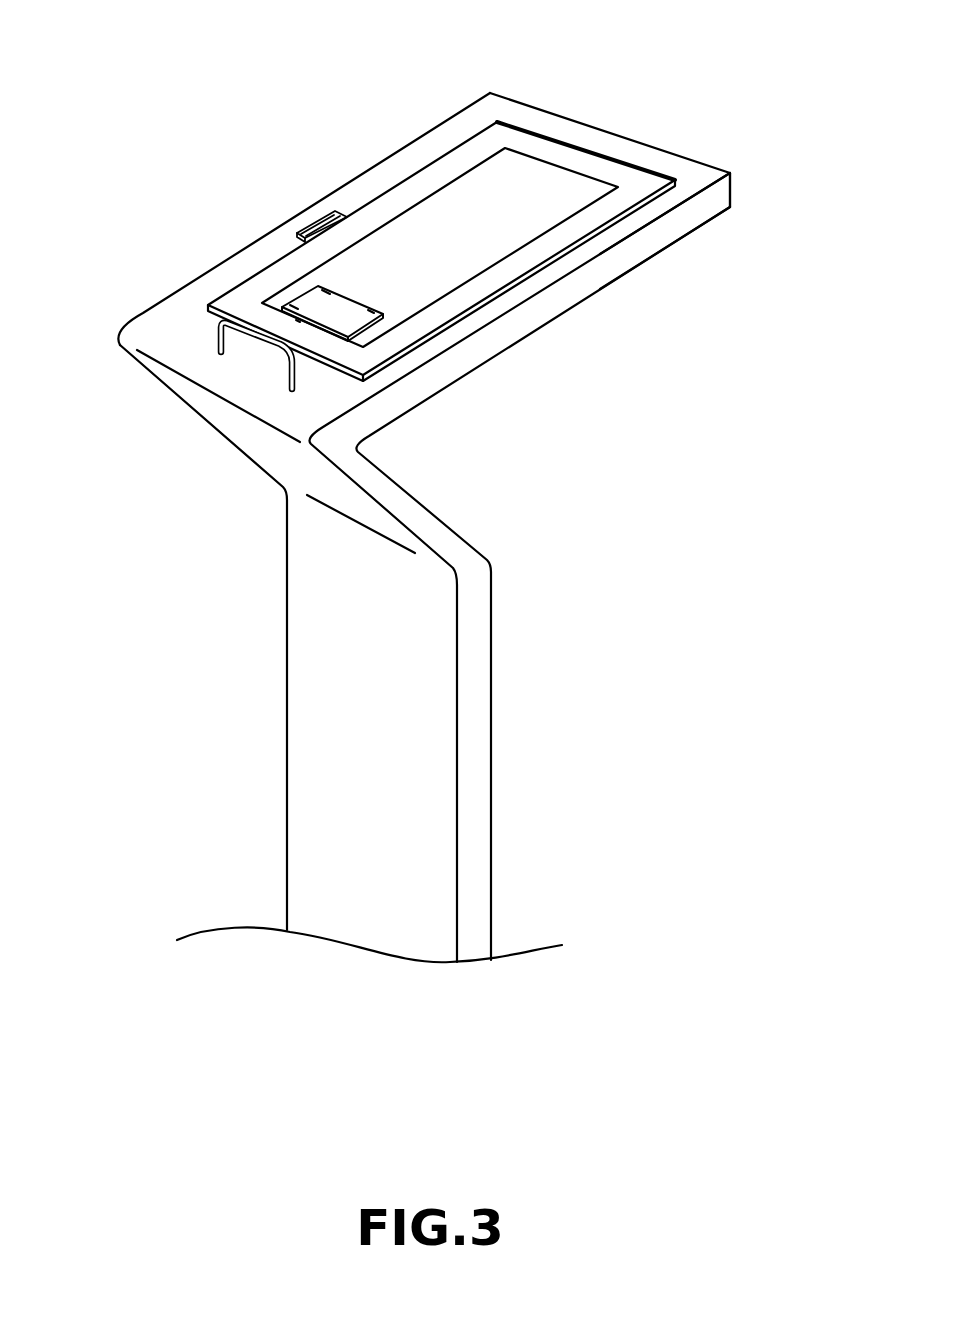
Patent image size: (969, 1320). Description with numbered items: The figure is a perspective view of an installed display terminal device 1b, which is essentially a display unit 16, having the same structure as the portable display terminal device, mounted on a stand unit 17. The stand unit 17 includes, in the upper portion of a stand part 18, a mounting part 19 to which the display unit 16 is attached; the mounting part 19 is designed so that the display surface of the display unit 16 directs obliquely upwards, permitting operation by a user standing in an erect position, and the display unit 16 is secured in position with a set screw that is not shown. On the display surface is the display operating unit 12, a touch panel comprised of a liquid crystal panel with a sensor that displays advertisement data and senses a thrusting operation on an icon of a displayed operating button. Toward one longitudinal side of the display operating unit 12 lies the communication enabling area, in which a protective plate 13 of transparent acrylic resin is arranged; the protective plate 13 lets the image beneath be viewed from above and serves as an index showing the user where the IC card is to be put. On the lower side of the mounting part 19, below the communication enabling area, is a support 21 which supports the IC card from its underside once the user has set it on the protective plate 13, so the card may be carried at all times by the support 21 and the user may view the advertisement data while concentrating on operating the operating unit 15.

The installed display terminal device 1b is at (724, 133).
The display operating unit 12 is at (458, 208).
The protective plate 13 is at (312, 307).
The operating unit 15 is at (313, 217).
The display unit 16 is at (620, 177).
The stand unit 17 is at (473, 707).
The stand part 18 is at (470, 802).
The mounting part 19 is at (495, 342).
The support 21 is at (215, 333).